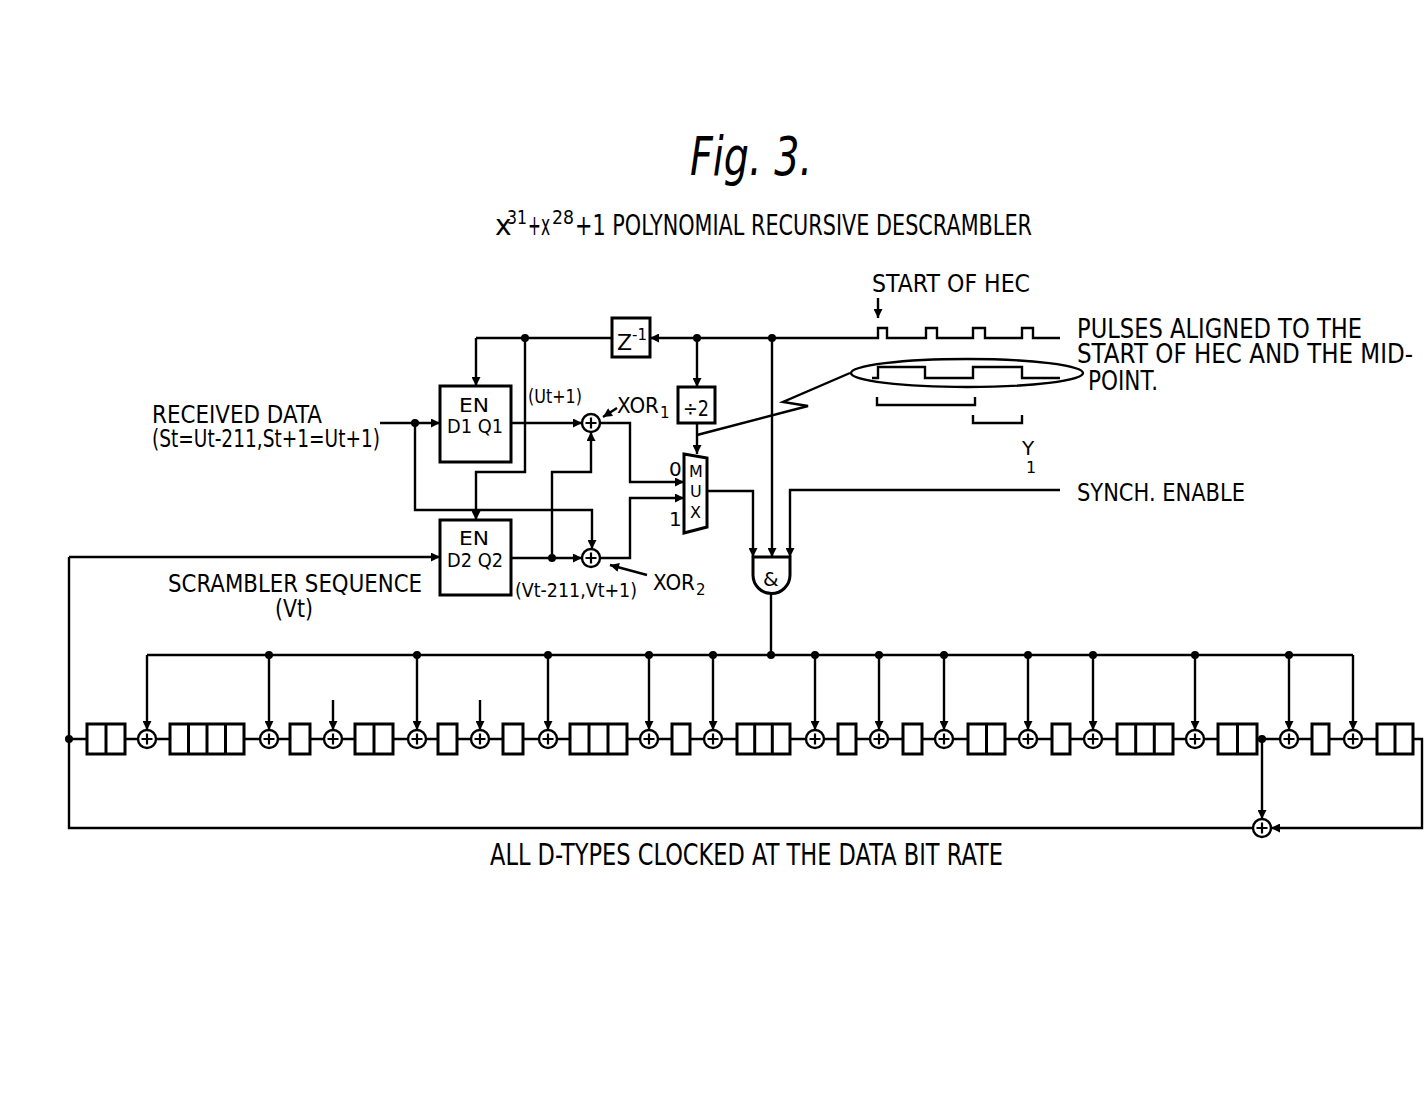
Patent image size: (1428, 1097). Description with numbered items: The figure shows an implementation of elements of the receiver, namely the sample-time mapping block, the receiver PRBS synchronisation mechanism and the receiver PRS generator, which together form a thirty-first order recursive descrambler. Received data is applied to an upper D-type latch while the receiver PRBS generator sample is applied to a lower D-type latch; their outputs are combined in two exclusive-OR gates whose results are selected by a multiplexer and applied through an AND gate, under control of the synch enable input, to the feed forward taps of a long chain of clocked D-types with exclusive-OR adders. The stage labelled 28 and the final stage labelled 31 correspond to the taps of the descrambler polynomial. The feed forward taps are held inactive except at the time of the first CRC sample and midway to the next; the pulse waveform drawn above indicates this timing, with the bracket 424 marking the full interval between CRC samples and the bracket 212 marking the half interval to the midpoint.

The shift register stage 28 is at (1241, 760).
The shift register stage 31 is at (1401, 760).
The 424-bit interval 424 is at (907, 405).
The 212-bit interval 212 is at (1003, 423).